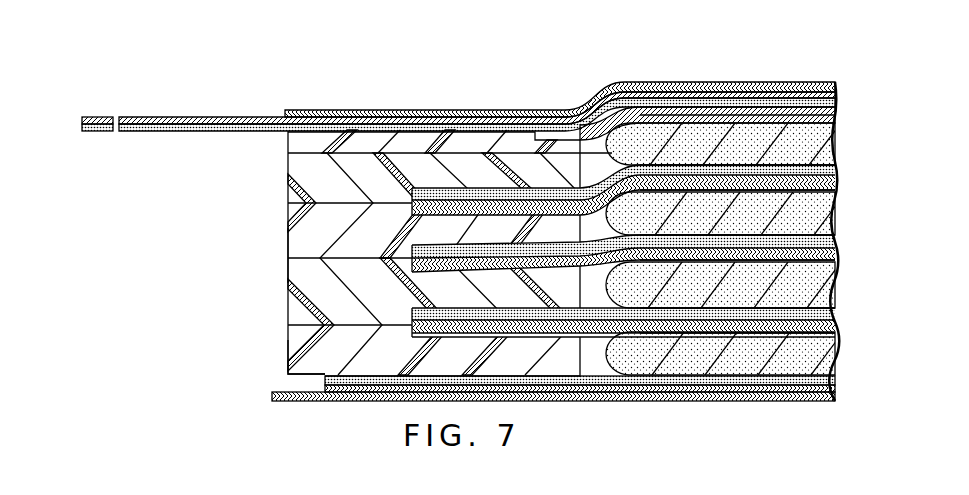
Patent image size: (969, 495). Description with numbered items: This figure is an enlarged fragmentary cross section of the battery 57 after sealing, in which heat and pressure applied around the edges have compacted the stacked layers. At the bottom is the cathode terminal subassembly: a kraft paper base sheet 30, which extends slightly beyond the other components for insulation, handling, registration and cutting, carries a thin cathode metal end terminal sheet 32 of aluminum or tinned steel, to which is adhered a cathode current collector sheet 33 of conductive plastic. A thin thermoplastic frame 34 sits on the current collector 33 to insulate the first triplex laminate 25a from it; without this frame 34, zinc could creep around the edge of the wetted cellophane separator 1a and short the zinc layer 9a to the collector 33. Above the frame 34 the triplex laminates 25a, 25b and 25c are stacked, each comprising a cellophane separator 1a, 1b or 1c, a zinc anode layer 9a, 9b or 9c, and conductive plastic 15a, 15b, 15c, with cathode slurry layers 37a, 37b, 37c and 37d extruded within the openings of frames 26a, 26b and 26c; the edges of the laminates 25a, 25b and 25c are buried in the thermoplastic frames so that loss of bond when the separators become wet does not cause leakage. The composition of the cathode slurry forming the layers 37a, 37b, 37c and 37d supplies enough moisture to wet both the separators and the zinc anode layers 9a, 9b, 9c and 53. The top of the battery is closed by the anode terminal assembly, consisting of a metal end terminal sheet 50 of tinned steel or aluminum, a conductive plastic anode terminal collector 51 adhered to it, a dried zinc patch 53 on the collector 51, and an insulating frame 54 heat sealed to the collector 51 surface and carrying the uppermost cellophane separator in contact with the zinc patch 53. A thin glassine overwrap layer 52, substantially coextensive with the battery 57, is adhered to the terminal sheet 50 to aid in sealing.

The cellophane separator 1a is at (566, 338).
The cellophane separator 1b is at (571, 272).
The cellophane separator 1c is at (552, 214).
The zinc anode layer 9a is at (512, 320).
The zinc anode layer 9b is at (485, 257).
The zinc anode layer 9c is at (473, 200).
The conductive plastic 15a is at (818, 316).
The strip extension 15b is at (818, 241).
The strip extension 15c is at (818, 171).
The triplex laminate 25a is at (411, 347).
The triplex laminate 25b is at (436, 280).
The triplex laminate 25c is at (400, 230).
The frame 26a is at (288, 294).
The fold 26b is at (288, 231).
The fold 26c is at (288, 181).
The base sheet 30 is at (293, 402).
The cathode metal end terminal sheet 32 is at (373, 398).
The cathode current collector sheet 33 is at (427, 376).
The frame 34 is at (288, 350).
The cathode slurry layer 37a is at (820, 356).
The cathode layer 37b is at (820, 286).
The cathode slurry layer 37c is at (810, 212).
The cathode slurry layer 37d is at (815, 147).
The metal end terminal sheet 50 is at (224, 117).
The conductive plastic anode terminal collector 51 is at (176, 132).
The glassine overwrap layer 52 is at (388, 110).
The zinc patch 53 is at (797, 117).
The frame 54 is at (288, 143).
The battery 57 is at (494, 98).